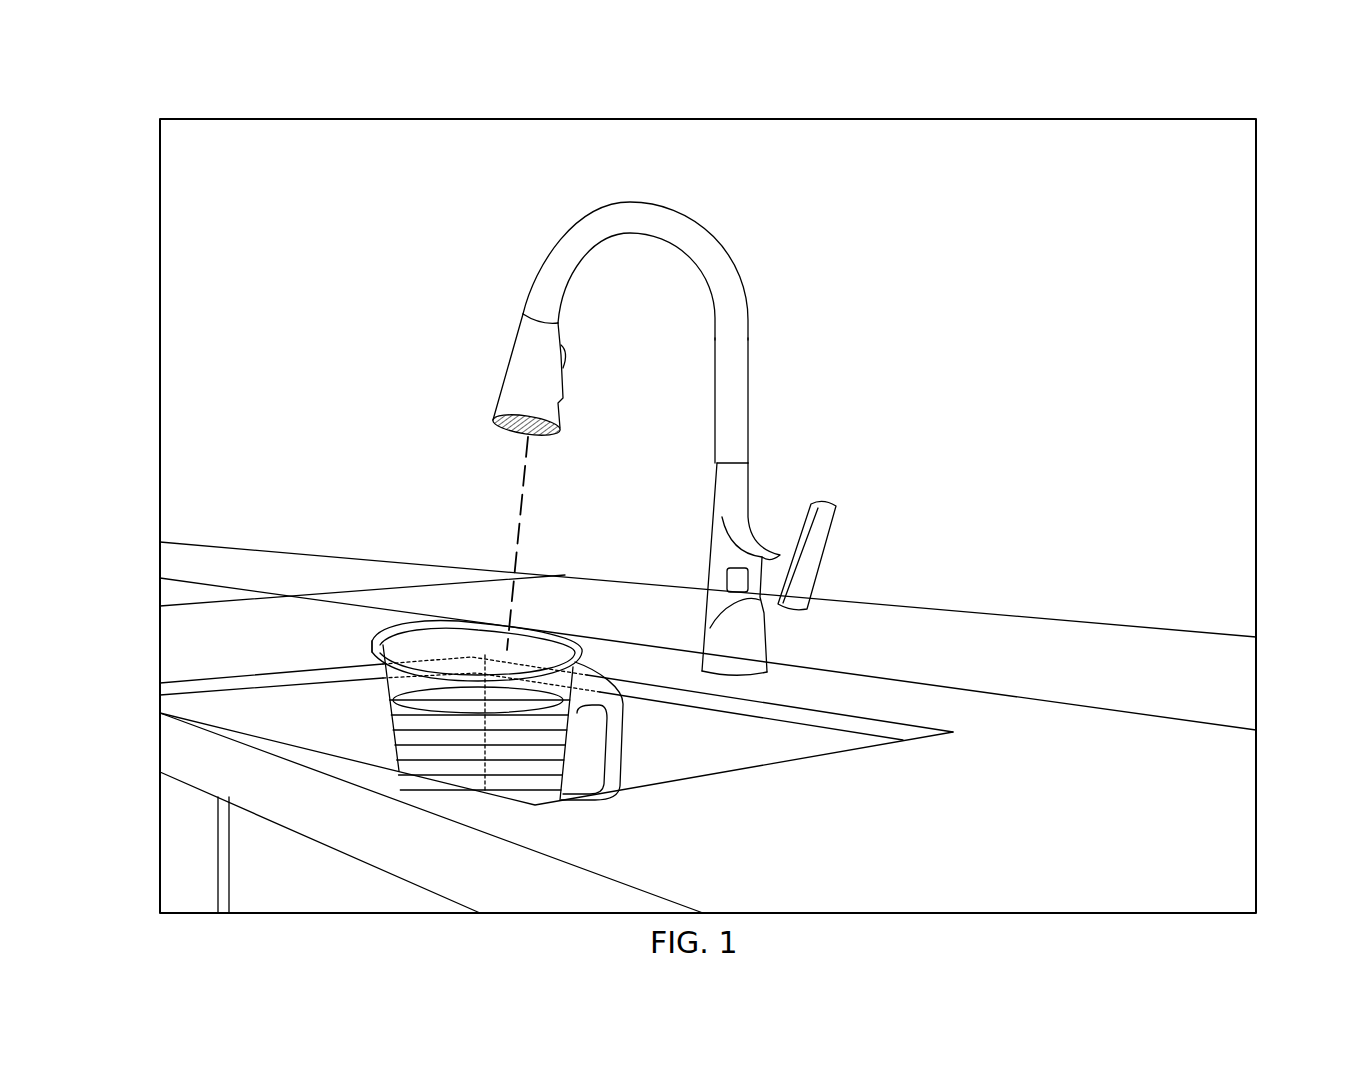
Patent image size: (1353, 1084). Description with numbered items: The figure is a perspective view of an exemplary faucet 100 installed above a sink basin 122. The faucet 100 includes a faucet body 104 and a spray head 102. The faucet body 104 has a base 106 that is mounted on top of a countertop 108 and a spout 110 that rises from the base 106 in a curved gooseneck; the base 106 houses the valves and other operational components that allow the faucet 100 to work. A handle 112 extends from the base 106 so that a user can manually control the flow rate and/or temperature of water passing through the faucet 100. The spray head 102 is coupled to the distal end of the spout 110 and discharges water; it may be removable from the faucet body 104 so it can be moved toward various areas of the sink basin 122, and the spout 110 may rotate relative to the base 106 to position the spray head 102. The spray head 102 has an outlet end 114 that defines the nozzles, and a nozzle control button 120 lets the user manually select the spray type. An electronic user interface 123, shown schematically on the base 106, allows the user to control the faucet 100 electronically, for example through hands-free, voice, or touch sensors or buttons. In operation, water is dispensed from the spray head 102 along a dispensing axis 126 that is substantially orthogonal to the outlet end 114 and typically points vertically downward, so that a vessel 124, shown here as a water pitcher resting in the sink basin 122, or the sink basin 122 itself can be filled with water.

The faucet 100 is at (702, 502).
The spray head 102 is at (373, 405).
The faucet body 104 is at (740, 325).
The base 106 is at (748, 650).
The countertop 108 is at (577, 868).
The spout 110 is at (647, 213).
The handle 112 is at (825, 520).
The outlet end 114 is at (475, 433).
The nozzle control button 120 is at (567, 360).
The sink basin 122 is at (188, 685).
The electronic user interface 123 is at (738, 593).
The vessel 124 is at (398, 645).
The dispensing axis 126 is at (520, 533).